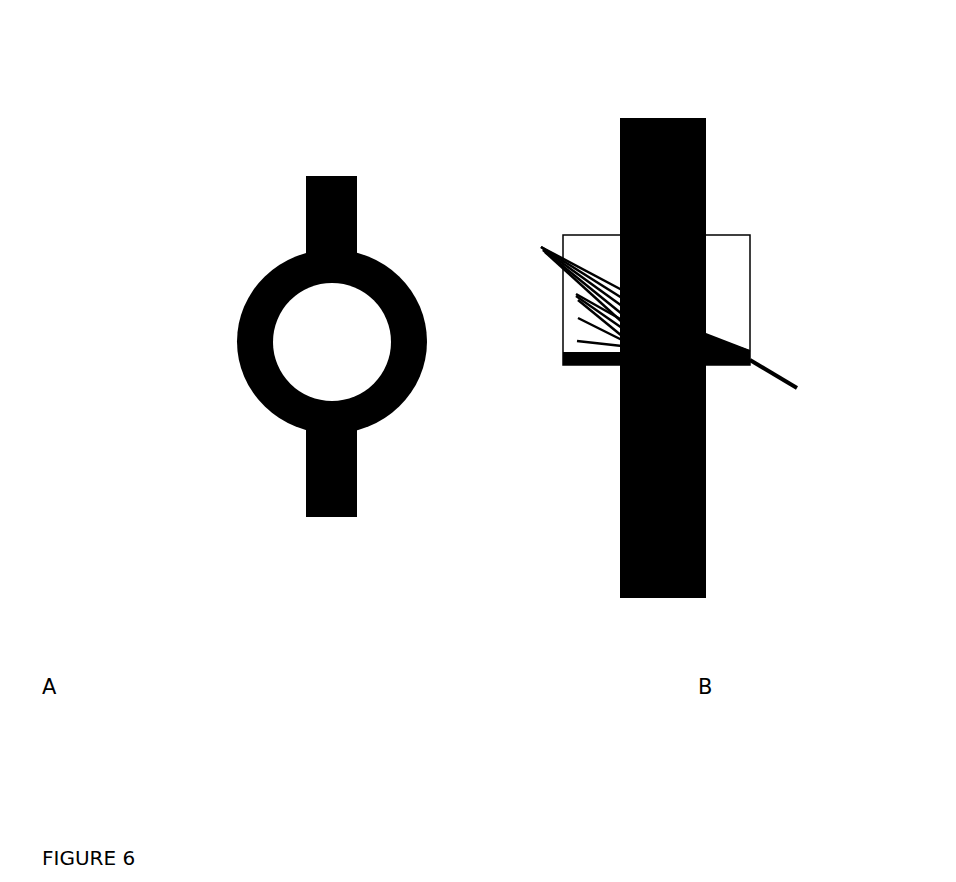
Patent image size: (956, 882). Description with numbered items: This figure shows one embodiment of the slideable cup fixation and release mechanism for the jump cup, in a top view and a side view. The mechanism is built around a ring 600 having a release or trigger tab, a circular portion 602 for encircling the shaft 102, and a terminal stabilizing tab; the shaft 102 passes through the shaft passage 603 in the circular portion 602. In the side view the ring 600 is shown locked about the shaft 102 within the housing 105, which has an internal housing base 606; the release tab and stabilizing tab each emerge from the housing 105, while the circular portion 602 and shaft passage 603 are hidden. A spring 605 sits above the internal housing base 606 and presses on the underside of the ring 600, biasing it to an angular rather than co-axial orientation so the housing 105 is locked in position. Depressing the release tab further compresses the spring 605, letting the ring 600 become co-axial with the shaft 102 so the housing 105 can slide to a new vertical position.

The ring 600 is at (254, 260).
The circular portion 602 is at (257, 272).
The shaft passage 603 is at (310, 343).
The spring 605 is at (587, 317).
The internal housing base 606 is at (728, 380).
The shaft 102 is at (622, 150).
The housing 105 is at (730, 235).